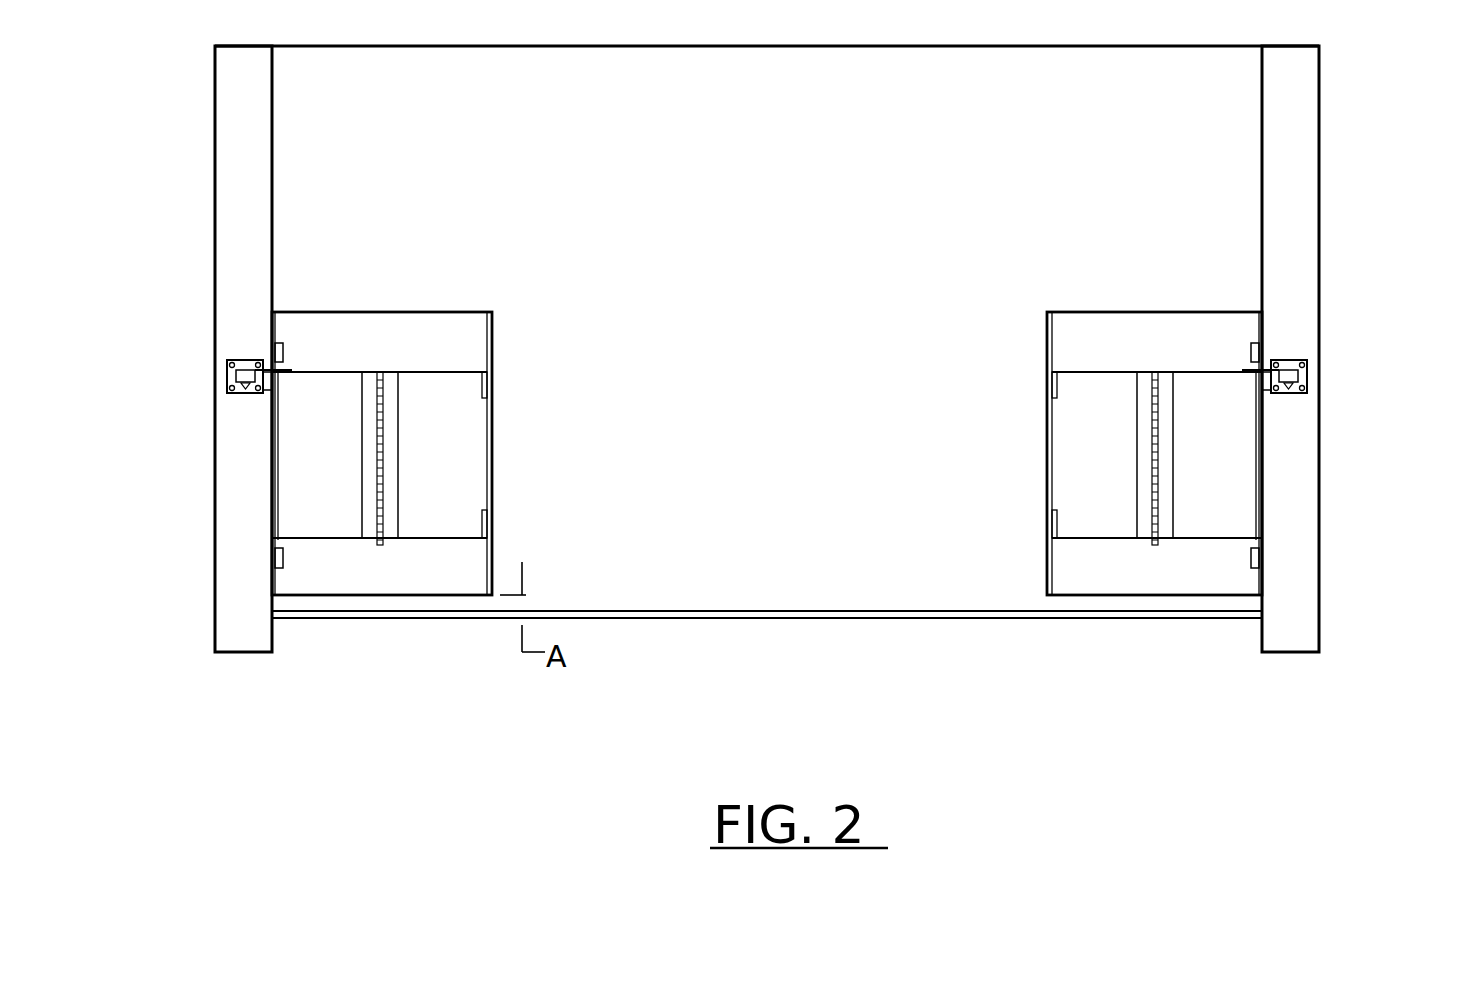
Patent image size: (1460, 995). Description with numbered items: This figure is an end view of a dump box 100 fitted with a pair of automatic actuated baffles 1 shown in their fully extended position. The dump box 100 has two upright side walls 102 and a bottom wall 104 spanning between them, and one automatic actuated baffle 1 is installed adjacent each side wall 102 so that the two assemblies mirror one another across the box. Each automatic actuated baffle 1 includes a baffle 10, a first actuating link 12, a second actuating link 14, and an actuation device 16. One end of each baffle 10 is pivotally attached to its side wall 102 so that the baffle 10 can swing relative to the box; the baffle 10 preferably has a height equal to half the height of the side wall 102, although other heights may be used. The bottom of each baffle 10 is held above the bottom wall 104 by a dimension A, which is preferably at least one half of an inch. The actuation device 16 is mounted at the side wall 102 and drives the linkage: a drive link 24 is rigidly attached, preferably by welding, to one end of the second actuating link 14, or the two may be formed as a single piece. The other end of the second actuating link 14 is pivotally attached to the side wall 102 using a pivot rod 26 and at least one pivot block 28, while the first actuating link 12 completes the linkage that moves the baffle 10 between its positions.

The dump box 100 is at (823, 150).
The side wall 102 is at (273, 206).
The bottom wall 104 is at (873, 616).
The automatic actuated baffle 1 is at (550, 356).
The baffle 10 is at (447, 462).
The first actuating link 12 is at (437, 524).
The second actuating link 14 is at (332, 523).
The actuation device 16 is at (230, 378).
The drive link 24 is at (243, 362).
The pivot rod 26 is at (275, 473).
The pivot block 28 is at (283, 362).